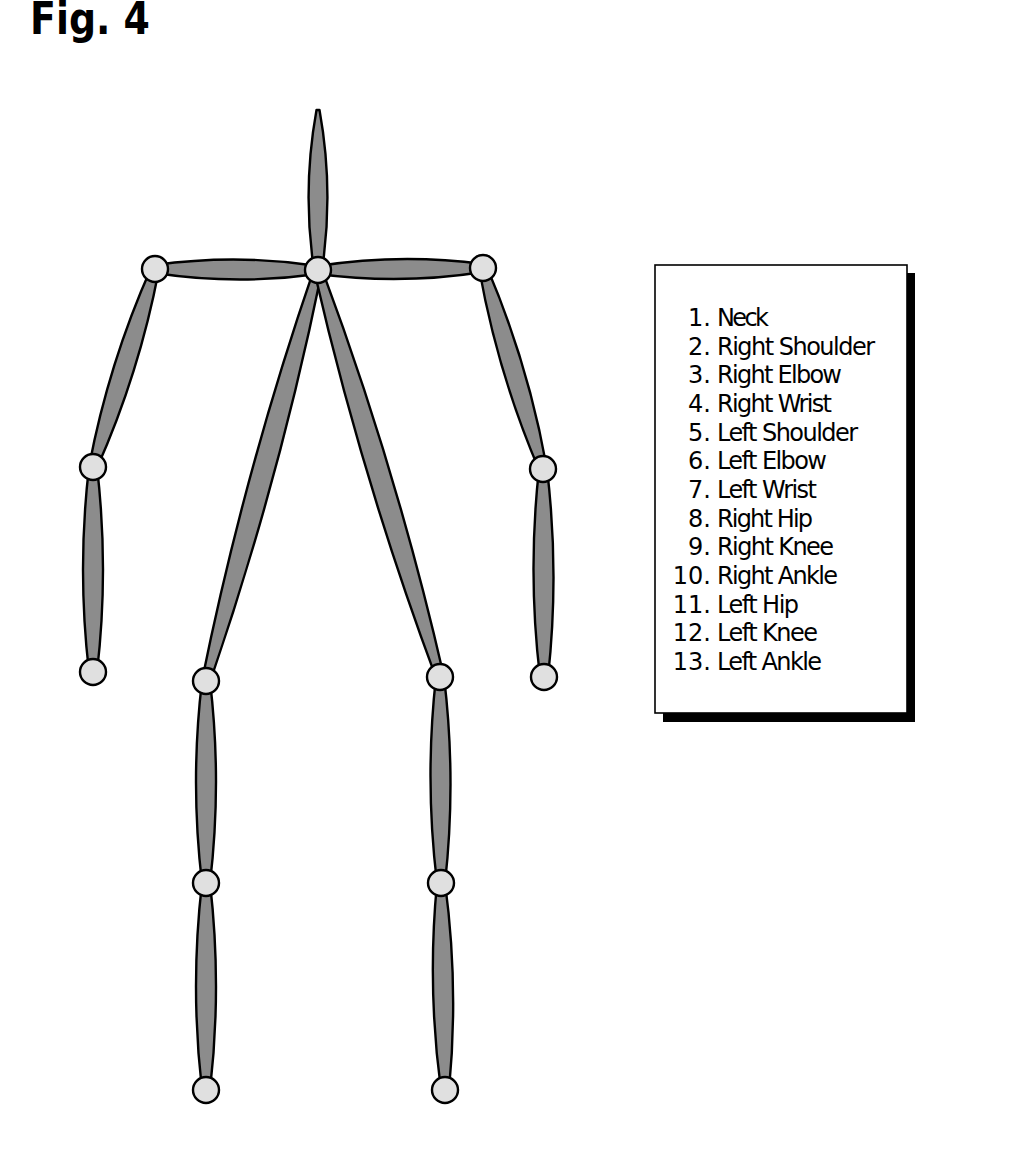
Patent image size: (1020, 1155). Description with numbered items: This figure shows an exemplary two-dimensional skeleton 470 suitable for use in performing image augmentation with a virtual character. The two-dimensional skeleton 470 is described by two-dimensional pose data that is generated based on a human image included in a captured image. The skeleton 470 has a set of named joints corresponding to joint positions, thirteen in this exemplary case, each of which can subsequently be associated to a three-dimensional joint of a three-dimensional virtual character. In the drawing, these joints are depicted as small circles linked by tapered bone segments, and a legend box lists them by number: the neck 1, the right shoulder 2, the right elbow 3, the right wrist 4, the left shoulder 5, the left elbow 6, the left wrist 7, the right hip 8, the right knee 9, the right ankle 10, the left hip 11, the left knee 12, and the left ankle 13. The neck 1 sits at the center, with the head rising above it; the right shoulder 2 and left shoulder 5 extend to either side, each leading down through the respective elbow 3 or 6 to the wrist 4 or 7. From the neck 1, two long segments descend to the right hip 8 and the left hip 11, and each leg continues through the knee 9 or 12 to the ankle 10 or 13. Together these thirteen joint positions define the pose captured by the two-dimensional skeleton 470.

The 2D skeleton 470 is at (520, 124).
The neck joint 1 is at (308, 259).
The right shoulder joint 2 is at (147, 258).
The right elbow joint 3 is at (107, 468).
The right wrist joint 4 is at (107, 674).
The left shoulder joint 5 is at (493, 257).
The left elbow joint 6 is at (529, 467).
The left wrist joint 7 is at (530, 677).
The right hip joint 8 is at (220, 682).
The right knee joint 9 is at (220, 882).
The right ankle joint 10 is at (220, 1088).
The left hip joint 11 is at (427, 677).
The left knee joint 12 is at (428, 883).
The left ankle joint 13 is at (432, 1090).